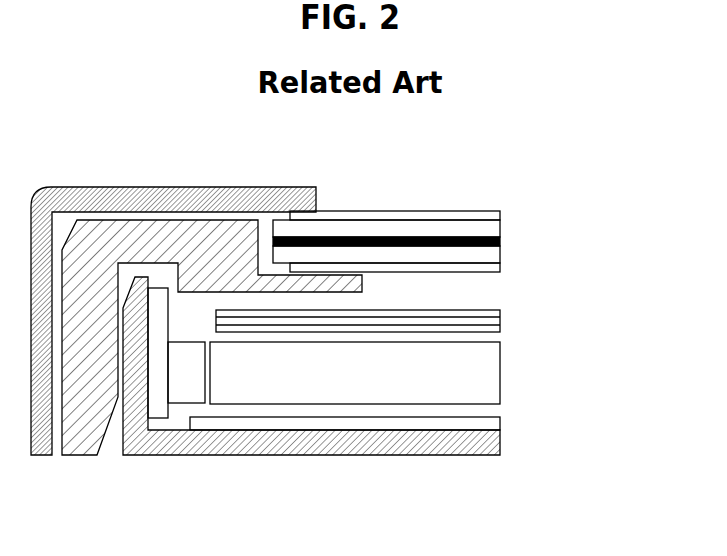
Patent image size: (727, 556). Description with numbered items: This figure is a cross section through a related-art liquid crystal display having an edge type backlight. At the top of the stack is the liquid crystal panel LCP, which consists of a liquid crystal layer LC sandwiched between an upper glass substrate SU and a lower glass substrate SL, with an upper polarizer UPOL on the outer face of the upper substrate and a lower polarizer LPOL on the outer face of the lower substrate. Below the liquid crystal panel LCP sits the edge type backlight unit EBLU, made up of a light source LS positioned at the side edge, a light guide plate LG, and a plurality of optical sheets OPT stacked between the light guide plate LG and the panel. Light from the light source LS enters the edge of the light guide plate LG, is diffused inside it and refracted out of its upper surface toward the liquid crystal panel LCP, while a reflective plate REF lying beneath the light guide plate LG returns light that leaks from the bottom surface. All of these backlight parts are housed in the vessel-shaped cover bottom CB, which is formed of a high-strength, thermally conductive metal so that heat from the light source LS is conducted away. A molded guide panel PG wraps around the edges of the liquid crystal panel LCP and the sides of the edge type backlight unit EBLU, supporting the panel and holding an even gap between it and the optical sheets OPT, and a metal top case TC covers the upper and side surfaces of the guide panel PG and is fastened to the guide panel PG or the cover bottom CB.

The top case TC is at (120, 200).
The panel guide PG is at (76, 448).
The light source LS is at (181, 395).
The cover bottom CB is at (492, 443).
The liquid crystal panel LCP is at (461, 244).
The upper polarizer UPOL is at (495, 214).
The upper glass substrate SU is at (492, 228).
The liquid crystal layer LC is at (492, 241).
The lower substrate SL is at (492, 254).
The lower polarizer LPOL is at (492, 268).
The edge type backlight unit EBLU is at (428, 374).
The optical sheets OPT is at (505, 322).
The light guide plate LG is at (492, 373).
The reflective plate REF is at (393, 427).